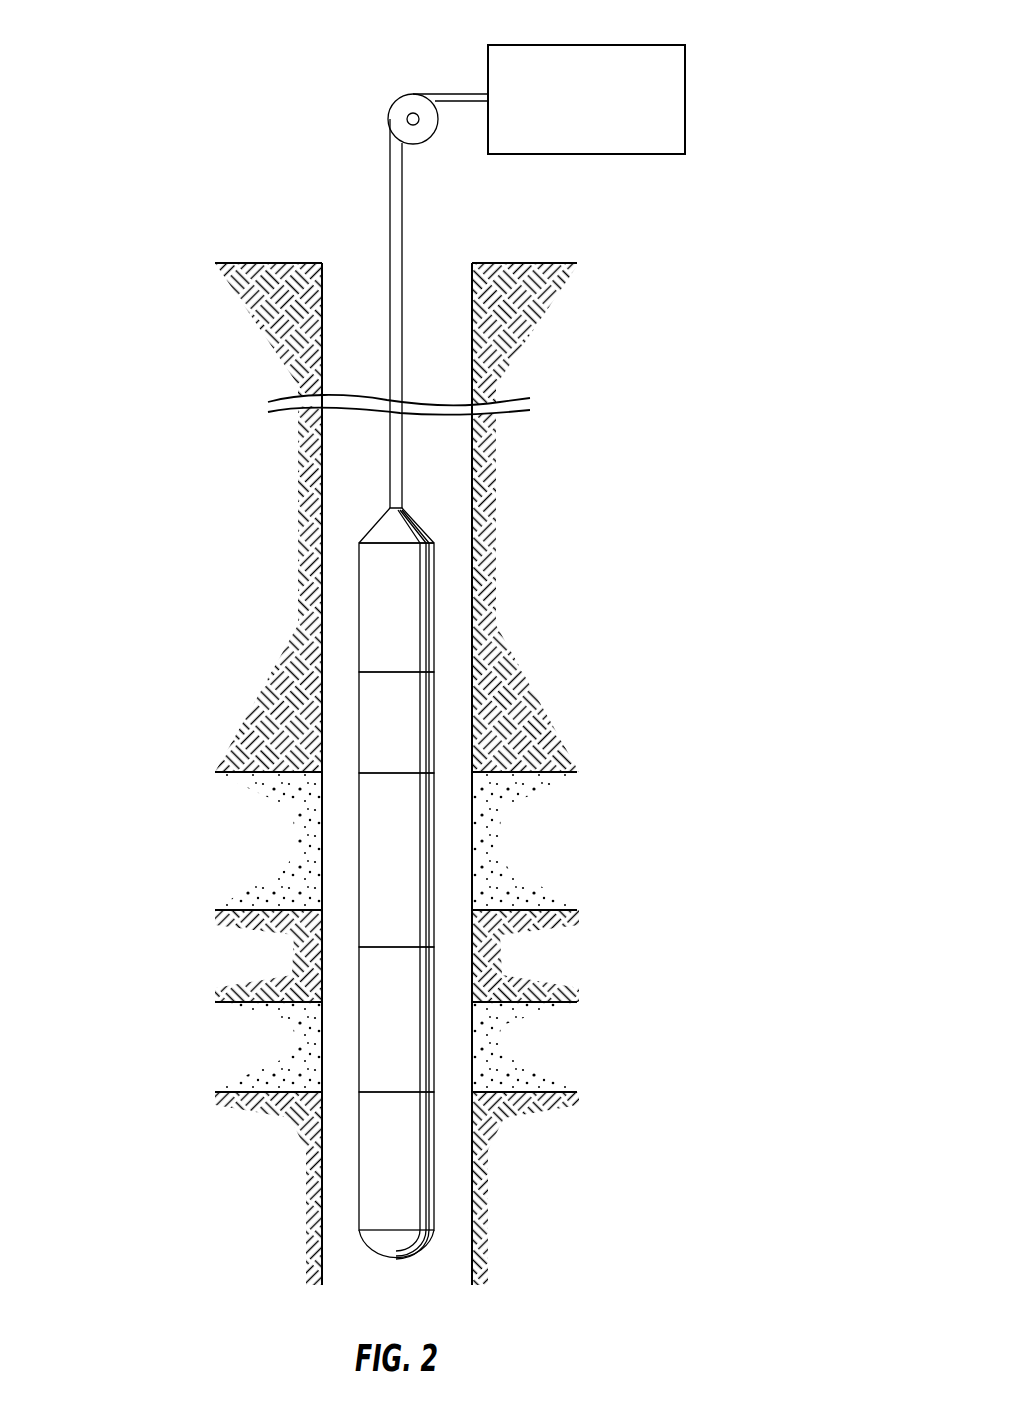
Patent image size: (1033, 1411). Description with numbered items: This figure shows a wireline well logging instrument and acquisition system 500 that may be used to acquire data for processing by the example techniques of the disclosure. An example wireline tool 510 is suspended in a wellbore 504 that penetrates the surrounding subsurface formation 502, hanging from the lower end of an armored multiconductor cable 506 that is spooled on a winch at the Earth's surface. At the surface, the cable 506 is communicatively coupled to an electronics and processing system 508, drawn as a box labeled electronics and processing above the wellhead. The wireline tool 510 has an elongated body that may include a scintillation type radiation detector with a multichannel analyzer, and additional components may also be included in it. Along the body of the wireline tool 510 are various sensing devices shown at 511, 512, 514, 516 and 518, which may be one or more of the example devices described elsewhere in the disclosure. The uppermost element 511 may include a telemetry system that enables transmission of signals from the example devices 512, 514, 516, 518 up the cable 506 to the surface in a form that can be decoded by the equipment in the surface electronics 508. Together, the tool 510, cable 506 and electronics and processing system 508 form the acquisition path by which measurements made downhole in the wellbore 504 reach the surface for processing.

The well logging system 500 is at (213, 142).
The subsurface formation 502 is at (495, 885).
The wellbore 504 is at (437, 493).
The armored multiconductor cable 506 is at (402, 240).
The electronics and processing system 508 is at (688, 72).
The wireline tool 510 is at (403, 883).
The sensing device 511 is at (380, 588).
The sensing device 512 is at (380, 712).
The sensing device 514 is at (380, 867).
The sensing device 516 is at (380, 983).
The sensing device 518 is at (380, 1193).